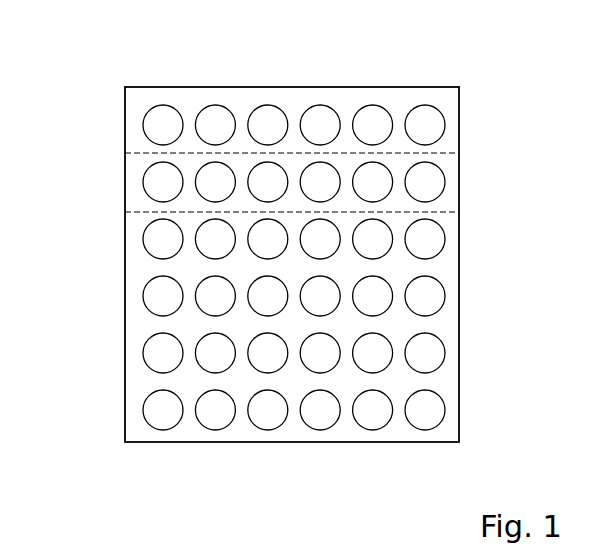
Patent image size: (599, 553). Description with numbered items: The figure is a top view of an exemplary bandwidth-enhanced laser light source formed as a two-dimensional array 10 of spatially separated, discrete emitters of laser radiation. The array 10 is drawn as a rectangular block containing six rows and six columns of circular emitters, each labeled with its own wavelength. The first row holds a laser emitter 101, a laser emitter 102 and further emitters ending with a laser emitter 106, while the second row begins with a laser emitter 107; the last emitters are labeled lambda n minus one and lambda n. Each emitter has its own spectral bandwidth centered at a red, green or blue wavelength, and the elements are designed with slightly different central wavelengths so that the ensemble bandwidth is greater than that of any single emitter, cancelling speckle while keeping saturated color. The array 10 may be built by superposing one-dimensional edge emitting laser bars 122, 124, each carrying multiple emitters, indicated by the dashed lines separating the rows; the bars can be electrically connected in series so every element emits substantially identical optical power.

The two-dimensional array 10 is at (104, 417).
The laser emitter 101 is at (163, 105).
The laser emitter 102 is at (215, 105).
The laser emitter 106 is at (423, 105).
The laser emitter 107 is at (143, 183).
The edge emitting laser bar 122 is at (460, 125).
The edge emitting laser bar 124 is at (460, 185).